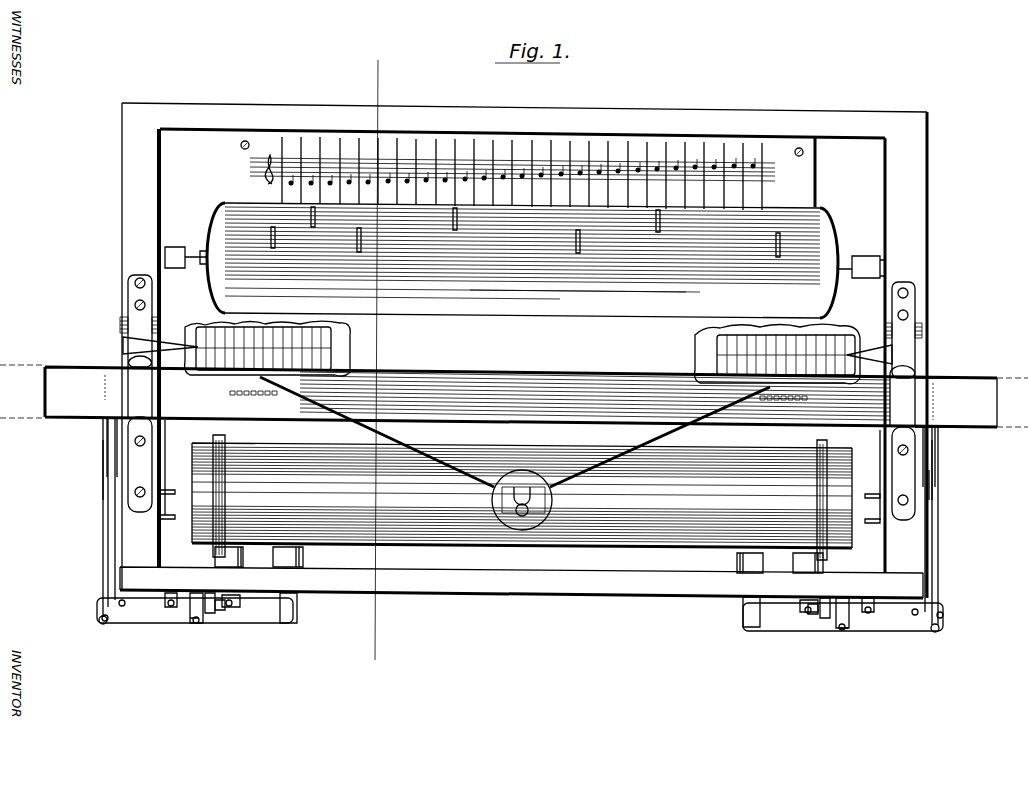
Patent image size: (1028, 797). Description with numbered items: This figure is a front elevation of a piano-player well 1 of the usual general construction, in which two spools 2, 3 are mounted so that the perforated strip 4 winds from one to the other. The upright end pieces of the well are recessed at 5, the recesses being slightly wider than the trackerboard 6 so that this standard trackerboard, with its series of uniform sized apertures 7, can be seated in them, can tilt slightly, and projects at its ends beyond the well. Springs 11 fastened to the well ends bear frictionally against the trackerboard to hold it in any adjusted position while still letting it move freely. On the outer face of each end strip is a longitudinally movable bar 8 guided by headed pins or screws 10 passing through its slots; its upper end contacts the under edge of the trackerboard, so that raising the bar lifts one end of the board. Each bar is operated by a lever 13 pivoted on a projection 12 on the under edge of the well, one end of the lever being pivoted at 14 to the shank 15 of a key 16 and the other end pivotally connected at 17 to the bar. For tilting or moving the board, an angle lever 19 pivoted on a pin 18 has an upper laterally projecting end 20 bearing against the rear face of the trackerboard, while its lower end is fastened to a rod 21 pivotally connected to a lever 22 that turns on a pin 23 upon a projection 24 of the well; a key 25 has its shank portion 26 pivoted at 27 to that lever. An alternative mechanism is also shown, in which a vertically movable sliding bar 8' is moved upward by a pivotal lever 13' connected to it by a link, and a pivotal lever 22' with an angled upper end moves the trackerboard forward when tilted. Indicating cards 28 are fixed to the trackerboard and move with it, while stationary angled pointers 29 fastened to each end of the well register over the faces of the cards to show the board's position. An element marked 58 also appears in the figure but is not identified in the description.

The well 1 is at (912, 220).
The spool 2 is at (826, 240).
The spool 3 is at (522, 497).
The perforated strip 4 is at (492, 260).
The recess 5 is at (945, 357).
The trackerboard 6 is at (521, 397).
The apertures 7 is at (300, 398).
The longitudinally movable bar 8 is at (520, 524).
The vertically movable sliding bar 8' is at (522, 470).
The headed pin or screw 10 is at (120, 578).
The spring 11 is at (521, 391).
The projection 12 is at (170, 608).
The lever 13 is at (516, 631).
The pivotal lever 13' is at (520, 479).
The pivot 14 is at (222, 612).
The shank 15 is at (232, 606).
The key 16 is at (218, 557).
The pivotal connection 17 is at (122, 607).
The pin 18 is at (935, 455).
The angle lever 19 is at (105, 435).
The upper laterally projecting end 20 is at (940, 398).
The rod 21 is at (103, 490).
The lever 22 is at (506, 638).
The pivotal lever 22' is at (520, 536).
The pin 23 is at (197, 624).
The projection 24 is at (192, 620).
The key 25 is at (305, 557).
The shank portion 26 is at (300, 600).
The pivot 27 is at (295, 622).
The indicating card 28 is at (205, 326).
The angled pointer 29 is at (150, 340).
The music sheet 58 is at (779, 148).